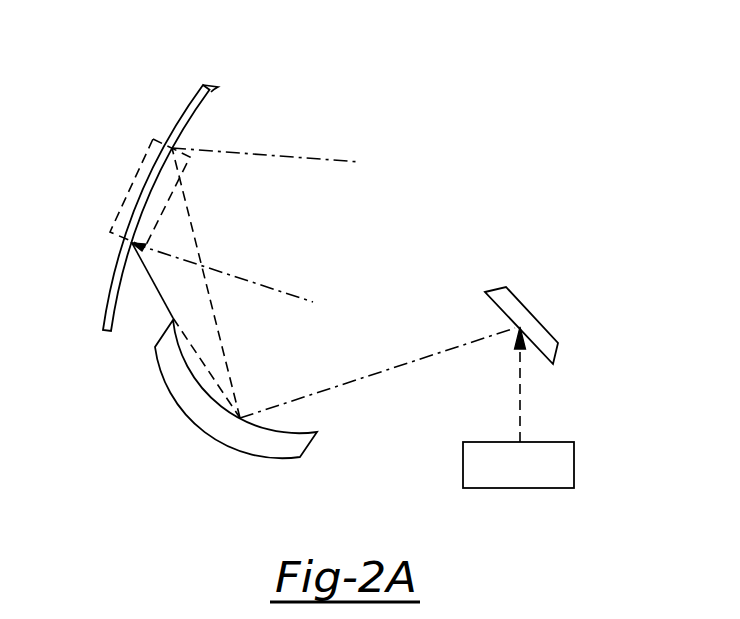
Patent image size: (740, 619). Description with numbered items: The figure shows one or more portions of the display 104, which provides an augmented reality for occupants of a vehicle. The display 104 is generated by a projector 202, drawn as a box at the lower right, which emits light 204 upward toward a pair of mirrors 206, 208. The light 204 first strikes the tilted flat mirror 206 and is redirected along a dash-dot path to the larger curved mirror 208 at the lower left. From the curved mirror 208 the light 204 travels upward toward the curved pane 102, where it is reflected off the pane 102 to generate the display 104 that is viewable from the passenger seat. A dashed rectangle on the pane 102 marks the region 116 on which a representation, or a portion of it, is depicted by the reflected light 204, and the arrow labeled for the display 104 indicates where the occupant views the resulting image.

The pane 102 is at (110, 312).
The display 104 is at (229, 64).
The region 116 is at (137, 168).
The projector 202 is at (560, 452).
The light 204 is at (407, 362).
The mirror 206 is at (537, 332).
The mirror 208 is at (203, 408).